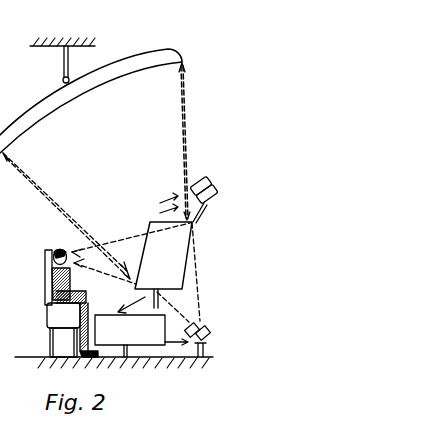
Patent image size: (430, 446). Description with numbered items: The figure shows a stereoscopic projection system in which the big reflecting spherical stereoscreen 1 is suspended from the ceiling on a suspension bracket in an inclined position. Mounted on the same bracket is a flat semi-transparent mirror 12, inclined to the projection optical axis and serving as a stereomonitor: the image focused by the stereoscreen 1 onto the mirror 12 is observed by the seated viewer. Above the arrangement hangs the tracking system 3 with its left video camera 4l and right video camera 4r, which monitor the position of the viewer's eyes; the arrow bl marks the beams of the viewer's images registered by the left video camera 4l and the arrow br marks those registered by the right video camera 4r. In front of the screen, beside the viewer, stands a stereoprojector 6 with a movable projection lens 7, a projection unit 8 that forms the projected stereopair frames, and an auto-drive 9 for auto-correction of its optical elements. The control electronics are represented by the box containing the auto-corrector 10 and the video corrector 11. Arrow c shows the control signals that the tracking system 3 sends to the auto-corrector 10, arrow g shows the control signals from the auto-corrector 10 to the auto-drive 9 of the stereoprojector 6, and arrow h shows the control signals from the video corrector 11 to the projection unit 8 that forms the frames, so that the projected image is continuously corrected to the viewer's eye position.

The stereoscreen 1 is at (83, 83).
The tracking system 3 is at (214, 189).
The left video camera 4l is at (207, 182).
The right video camera 4r is at (213, 200).
The flat semi-transparent mirror 12 is at (178, 263).
The stereoprojector 6 is at (216, 313).
The movable projection lens 7 is at (207, 327).
The projection unit 8 is at (227, 356).
The auto-drive 9 is at (207, 337).
The auto-corrector 10 is at (130, 336).
The video corrector 11 is at (130, 336).
The control signals of the tracking system c is at (126, 307).
The control signals to the auto-drives g is at (183, 369).
The control signals to the projection units h is at (173, 343).
The beams registered by the left video camera bl is at (160, 192).
The beams registered by the right video camera br is at (147, 210).